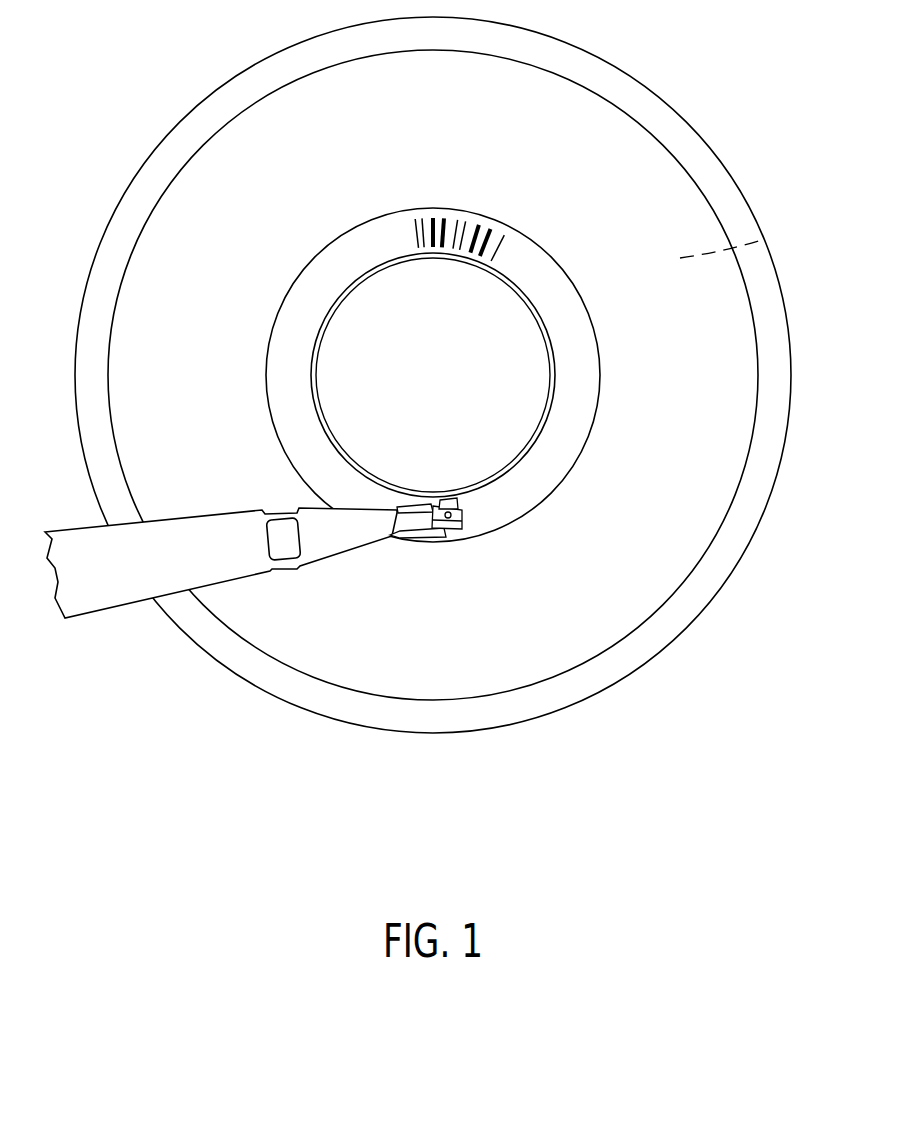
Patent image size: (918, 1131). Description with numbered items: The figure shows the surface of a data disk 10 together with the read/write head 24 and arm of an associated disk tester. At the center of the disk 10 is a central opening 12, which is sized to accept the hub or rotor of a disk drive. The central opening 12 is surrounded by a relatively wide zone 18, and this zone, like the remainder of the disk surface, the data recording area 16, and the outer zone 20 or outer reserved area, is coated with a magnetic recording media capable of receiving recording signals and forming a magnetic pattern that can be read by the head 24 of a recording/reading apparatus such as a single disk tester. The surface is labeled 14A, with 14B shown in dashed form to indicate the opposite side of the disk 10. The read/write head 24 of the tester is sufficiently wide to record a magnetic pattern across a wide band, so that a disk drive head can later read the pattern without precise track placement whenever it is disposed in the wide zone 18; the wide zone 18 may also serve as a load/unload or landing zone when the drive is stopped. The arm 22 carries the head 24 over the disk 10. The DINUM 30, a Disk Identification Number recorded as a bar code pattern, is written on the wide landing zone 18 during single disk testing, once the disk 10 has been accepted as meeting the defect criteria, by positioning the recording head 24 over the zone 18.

The disk 10 is at (683, 123).
The central opening 12 is at (528, 312).
The top surface 14A is at (442, 148).
The bottom surface 14B is at (762, 240).
The data recording area 16 is at (728, 347).
The wide zone 18 is at (575, 400).
The outer zone 20 is at (733, 532).
The handle 22 is at (138, 580).
The read/write head 24 is at (462, 533).
The DINUM 30 is at (487, 212).